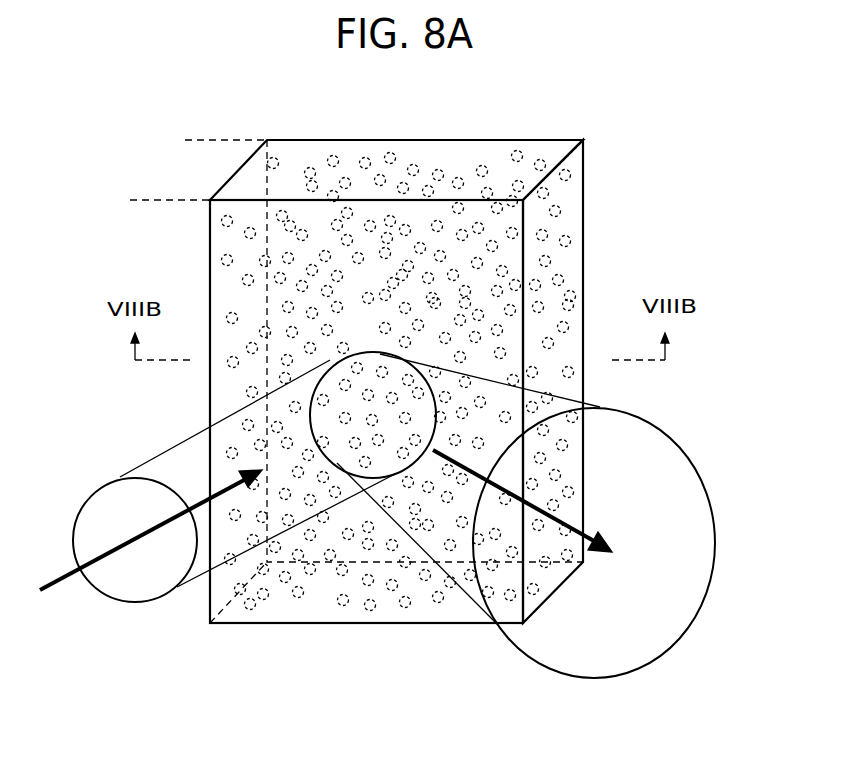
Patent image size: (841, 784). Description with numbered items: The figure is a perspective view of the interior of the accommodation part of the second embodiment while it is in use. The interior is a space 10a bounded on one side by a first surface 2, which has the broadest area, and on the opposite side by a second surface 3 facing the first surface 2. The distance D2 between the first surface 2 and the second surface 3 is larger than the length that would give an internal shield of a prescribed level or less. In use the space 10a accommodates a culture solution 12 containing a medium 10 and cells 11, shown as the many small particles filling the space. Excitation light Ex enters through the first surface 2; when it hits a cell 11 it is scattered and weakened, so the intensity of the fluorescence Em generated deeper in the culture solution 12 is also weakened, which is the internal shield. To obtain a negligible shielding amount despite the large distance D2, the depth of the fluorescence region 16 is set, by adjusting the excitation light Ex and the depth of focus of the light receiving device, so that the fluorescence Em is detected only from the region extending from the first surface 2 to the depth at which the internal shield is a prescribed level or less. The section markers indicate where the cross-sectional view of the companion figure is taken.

The space 10a is at (337, 136).
The first surface 2 is at (218, 248).
The second surface 3 is at (267, 302).
The fluorescence region 16 is at (372, 351).
The medium 10 is at (572, 208).
The cell 11 is at (577, 243).
The culture solution 12 is at (664, 197).
The distance D2 is at (186, 149).
The excitation light Ex is at (163, 465).
The fluorescence Em is at (680, 465).